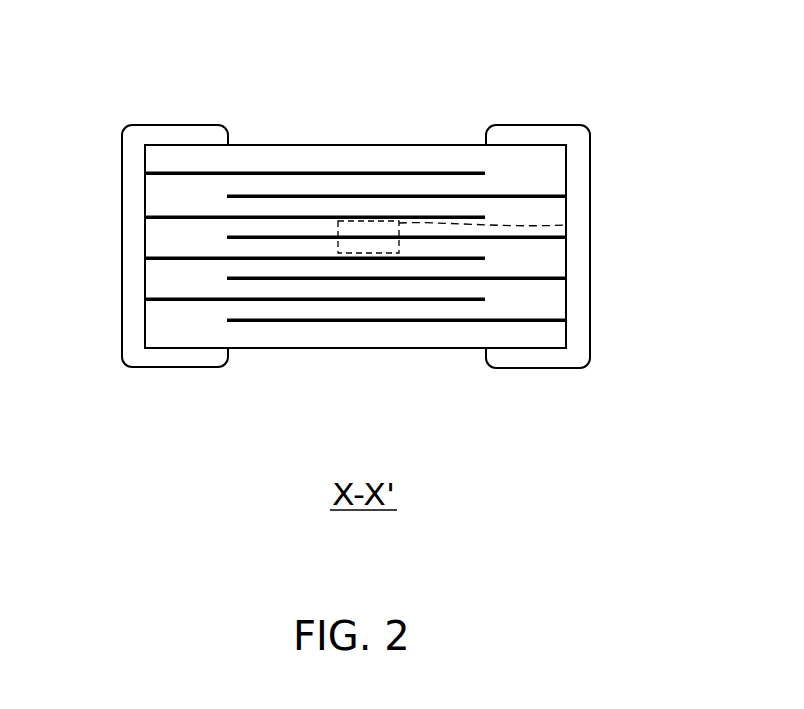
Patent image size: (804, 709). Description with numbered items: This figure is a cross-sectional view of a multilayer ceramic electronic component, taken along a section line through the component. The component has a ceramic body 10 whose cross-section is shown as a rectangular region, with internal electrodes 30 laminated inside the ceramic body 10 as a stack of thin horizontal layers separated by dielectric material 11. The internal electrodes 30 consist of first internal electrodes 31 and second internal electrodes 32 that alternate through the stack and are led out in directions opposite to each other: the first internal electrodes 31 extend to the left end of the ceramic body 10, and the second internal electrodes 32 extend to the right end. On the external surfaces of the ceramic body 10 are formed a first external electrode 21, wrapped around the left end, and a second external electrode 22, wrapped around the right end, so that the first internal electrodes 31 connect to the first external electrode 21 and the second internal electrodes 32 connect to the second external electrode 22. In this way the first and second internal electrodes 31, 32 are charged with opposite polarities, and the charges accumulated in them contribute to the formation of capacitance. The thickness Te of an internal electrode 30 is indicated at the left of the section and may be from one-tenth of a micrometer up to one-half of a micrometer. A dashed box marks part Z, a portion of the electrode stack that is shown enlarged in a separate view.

The ceramic body 10 is at (303, 344).
The dielectric layer 11 is at (435, 251).
The first external electrode 21 is at (188, 125).
The second external electrode 22 is at (563, 125).
The internal electrodes 30 is at (355, 172).
The first internal electrode 31 is at (289, 215).
The second internal electrode 32 is at (318, 237).
The thickness of the internal electrode Te is at (150, 220).
The part Z is at (570, 223).